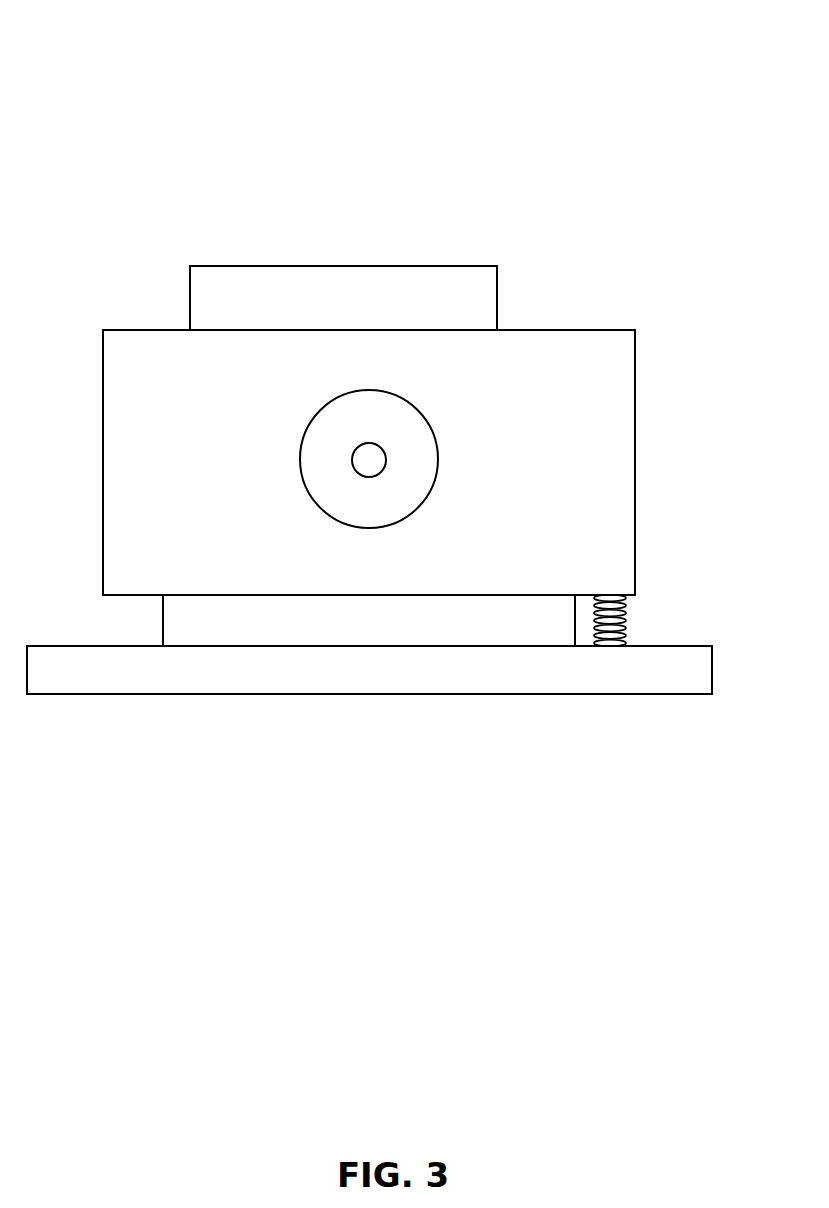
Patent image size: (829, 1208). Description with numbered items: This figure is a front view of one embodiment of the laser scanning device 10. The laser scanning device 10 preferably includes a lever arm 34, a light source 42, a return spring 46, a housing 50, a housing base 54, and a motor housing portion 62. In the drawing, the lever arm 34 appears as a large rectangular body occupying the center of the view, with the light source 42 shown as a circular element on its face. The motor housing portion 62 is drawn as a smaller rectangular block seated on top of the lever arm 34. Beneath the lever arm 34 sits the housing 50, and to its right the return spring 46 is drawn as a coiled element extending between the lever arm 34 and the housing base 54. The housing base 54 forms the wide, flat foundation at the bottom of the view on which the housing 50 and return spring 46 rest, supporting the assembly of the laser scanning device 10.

The laser scanning device 10 is at (597, 145).
The lever arm 34 is at (563, 358).
The light source 42 is at (343, 508).
The return spring 46 is at (625, 620).
The housing 50 is at (191, 623).
The housing base 54 is at (495, 680).
The motor housing portion 62 is at (383, 275).